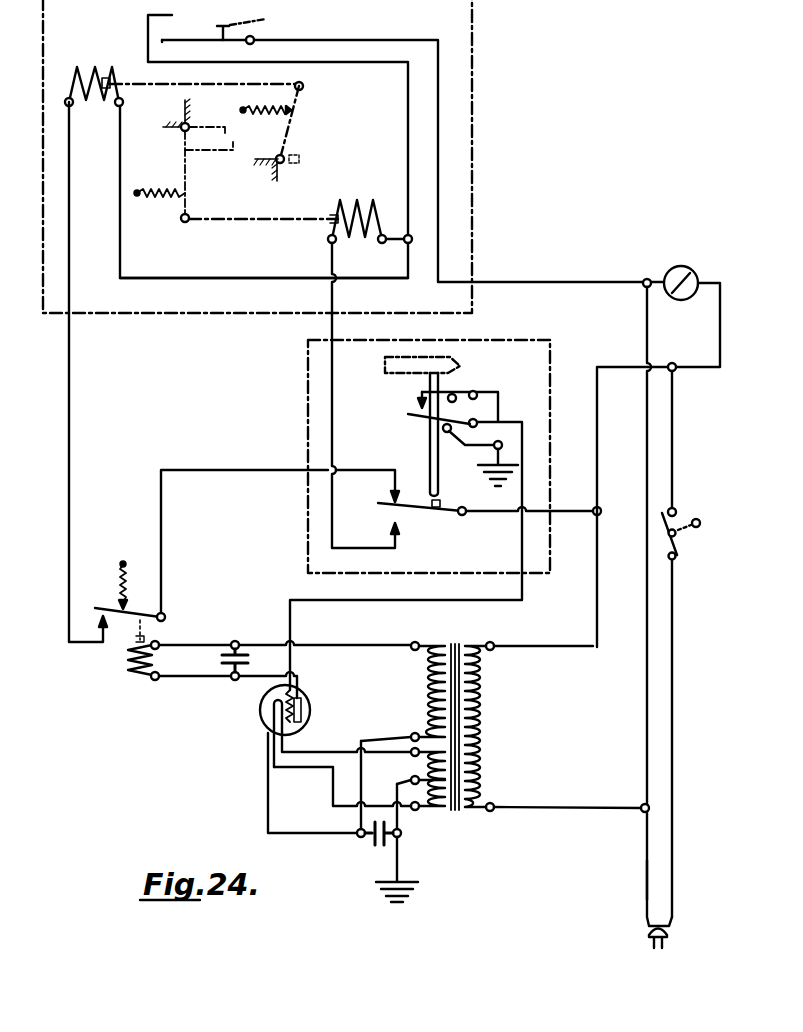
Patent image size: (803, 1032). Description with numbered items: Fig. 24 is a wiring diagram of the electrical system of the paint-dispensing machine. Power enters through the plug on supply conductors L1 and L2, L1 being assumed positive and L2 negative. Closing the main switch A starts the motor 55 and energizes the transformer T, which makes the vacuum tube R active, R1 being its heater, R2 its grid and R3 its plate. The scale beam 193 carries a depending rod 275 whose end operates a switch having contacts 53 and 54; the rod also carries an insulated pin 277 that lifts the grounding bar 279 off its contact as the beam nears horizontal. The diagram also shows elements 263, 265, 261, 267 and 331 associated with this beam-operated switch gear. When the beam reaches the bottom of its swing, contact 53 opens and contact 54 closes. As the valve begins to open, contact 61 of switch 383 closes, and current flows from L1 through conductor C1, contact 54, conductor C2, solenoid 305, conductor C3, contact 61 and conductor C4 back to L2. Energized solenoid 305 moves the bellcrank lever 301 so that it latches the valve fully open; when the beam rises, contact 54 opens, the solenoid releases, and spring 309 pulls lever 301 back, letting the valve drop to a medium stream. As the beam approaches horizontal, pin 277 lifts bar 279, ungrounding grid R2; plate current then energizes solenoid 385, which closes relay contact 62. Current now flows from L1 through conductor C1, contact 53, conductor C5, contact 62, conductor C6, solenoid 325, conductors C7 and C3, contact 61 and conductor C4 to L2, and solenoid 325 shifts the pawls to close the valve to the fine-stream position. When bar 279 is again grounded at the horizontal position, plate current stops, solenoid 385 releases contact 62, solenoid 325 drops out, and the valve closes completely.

The contact 61 is at (171, 34).
The switch 383 is at (266, 19).
The solenoid 325 is at (79, 67).
The conductor C6 is at (69, 442).
The conductor C3 is at (408, 125).
The conductor C4 is at (440, 150).
The conductor C7 is at (212, 278).
The bellcrank lever 301 is at (182, 142).
The spring 331 is at (278, 118).
The spring 309 is at (162, 200).
The solenoid 305 is at (342, 201).
The conductor C5 is at (240, 460).
The conductor C2 is at (332, 385).
The scale beam 193 is at (452, 358).
The contact block 263 is at (475, 392).
The contact arm 265 is at (420, 398).
The insulated pin 277 is at (478, 420).
The bar 279 is at (428, 416).
The contact 261 is at (510, 431).
The rod 275 is at (438, 492).
The contact 53 is at (409, 489).
The contact 54 is at (410, 537).
The switch blade 267 is at (465, 516).
The conductor C1 is at (597, 445).
The motor 55 is at (693, 270).
The main switch A is at (677, 511).
The supply conductor L1 is at (672, 770).
The supply conductor L2 is at (647, 879).
The relay contact 62 is at (103, 645).
The solenoid 385 is at (148, 678).
The vacuum tube R is at (260, 718).
The heater R1 is at (300, 728).
The grid R2 is at (292, 698).
The plate R3 is at (302, 710).
The transformer T is at (482, 722).